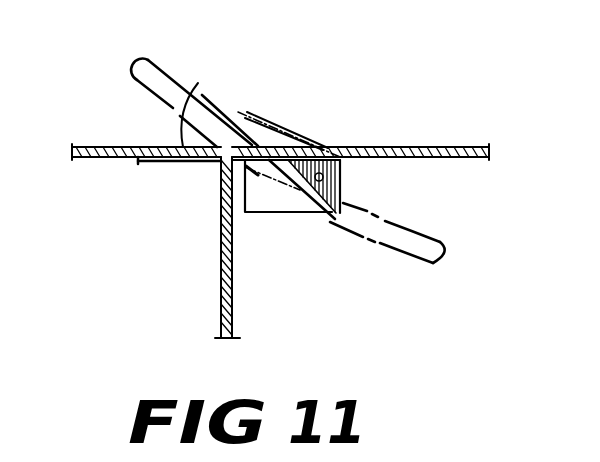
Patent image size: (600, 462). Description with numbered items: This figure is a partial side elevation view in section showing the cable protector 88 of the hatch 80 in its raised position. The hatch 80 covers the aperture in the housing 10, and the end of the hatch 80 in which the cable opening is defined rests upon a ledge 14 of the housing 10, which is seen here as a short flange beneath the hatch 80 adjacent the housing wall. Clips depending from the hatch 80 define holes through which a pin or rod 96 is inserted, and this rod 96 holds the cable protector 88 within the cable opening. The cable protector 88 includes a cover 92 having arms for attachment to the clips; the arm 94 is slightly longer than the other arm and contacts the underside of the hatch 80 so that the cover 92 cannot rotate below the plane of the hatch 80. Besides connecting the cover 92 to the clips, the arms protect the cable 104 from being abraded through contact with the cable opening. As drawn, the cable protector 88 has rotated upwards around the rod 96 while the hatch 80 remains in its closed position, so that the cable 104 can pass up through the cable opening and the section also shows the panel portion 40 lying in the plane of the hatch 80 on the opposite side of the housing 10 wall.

The housing 10 is at (220, 279).
The ledge 14 is at (197, 163).
The horizontal plate (door panel) 40 is at (110, 147).
The hatch 80 is at (390, 147).
The cable protector 88 is at (278, 118).
The cover 92 is at (242, 112).
The arm 94 is at (264, 208).
The rod 96 is at (343, 190).
The cable 104 is at (162, 63).